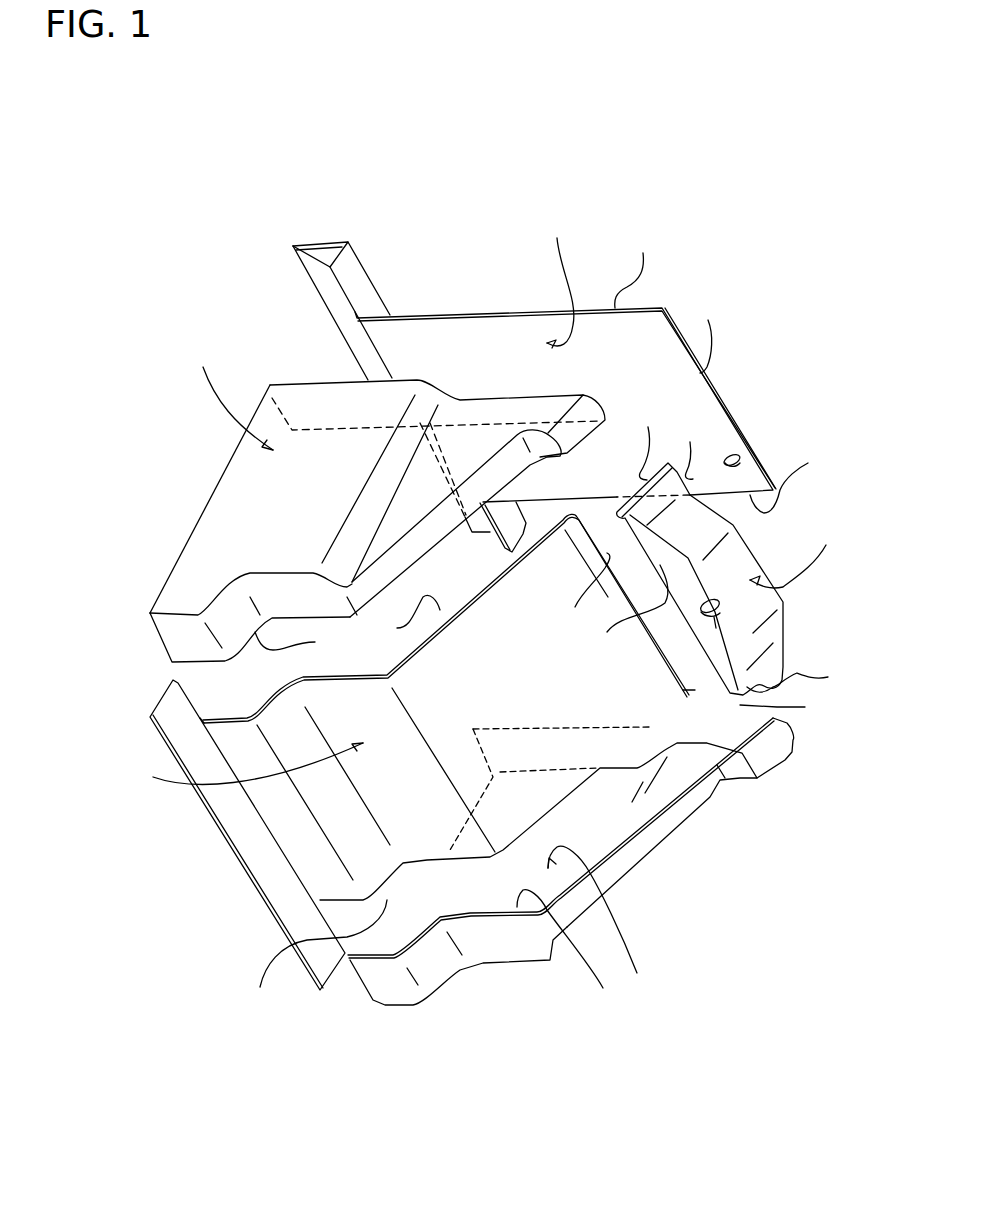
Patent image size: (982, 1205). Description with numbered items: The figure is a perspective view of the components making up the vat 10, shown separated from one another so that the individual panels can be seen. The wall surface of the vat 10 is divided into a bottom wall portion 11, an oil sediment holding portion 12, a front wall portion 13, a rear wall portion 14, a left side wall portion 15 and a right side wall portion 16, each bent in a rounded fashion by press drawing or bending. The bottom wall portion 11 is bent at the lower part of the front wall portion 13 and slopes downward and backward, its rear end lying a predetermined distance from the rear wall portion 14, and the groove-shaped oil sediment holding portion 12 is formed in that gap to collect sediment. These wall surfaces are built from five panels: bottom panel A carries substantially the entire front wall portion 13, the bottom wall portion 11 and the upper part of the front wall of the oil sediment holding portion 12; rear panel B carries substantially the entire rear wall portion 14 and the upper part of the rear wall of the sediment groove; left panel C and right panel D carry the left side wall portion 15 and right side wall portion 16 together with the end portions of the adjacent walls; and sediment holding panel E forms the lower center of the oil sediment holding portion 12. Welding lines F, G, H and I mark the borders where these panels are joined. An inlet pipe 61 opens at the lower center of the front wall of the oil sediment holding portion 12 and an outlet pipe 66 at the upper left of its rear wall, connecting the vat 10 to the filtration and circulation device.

The vat 10 is at (168, 540).
The bottom wall portion 11 is at (502, 618).
The oil sediment holding portion 12 is at (773, 633).
The front wall portion 13 is at (428, 835).
The rear wall portion 14 is at (482, 337).
The left side wall portion 15 is at (583, 828).
The right side wall portion 16 is at (233, 507).
The inlet pipe 61 is at (717, 617).
The outlet pipe 66 is at (733, 455).